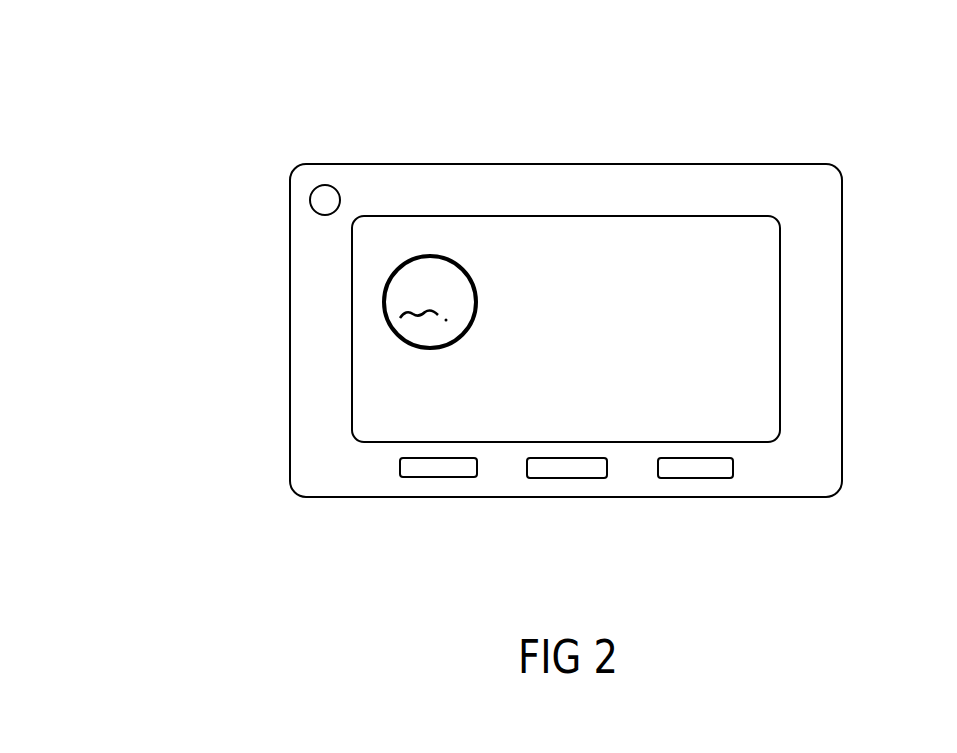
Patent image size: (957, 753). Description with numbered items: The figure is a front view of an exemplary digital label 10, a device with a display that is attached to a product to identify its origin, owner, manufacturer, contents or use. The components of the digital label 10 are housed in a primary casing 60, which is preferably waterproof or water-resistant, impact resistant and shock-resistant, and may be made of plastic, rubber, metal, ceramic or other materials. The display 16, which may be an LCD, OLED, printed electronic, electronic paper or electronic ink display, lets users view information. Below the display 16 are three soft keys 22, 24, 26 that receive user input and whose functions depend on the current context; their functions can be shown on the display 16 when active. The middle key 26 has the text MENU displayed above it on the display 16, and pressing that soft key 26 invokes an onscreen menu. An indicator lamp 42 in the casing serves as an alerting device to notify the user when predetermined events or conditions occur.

The digital label 10 is at (190, 153).
The display 16 is at (552, 213).
The soft key 22 is at (442, 483).
The soft key 24 is at (702, 485).
The soft key 26 is at (580, 483).
The indicator lamp 42 is at (327, 185).
The primary casing 60 is at (788, 148).